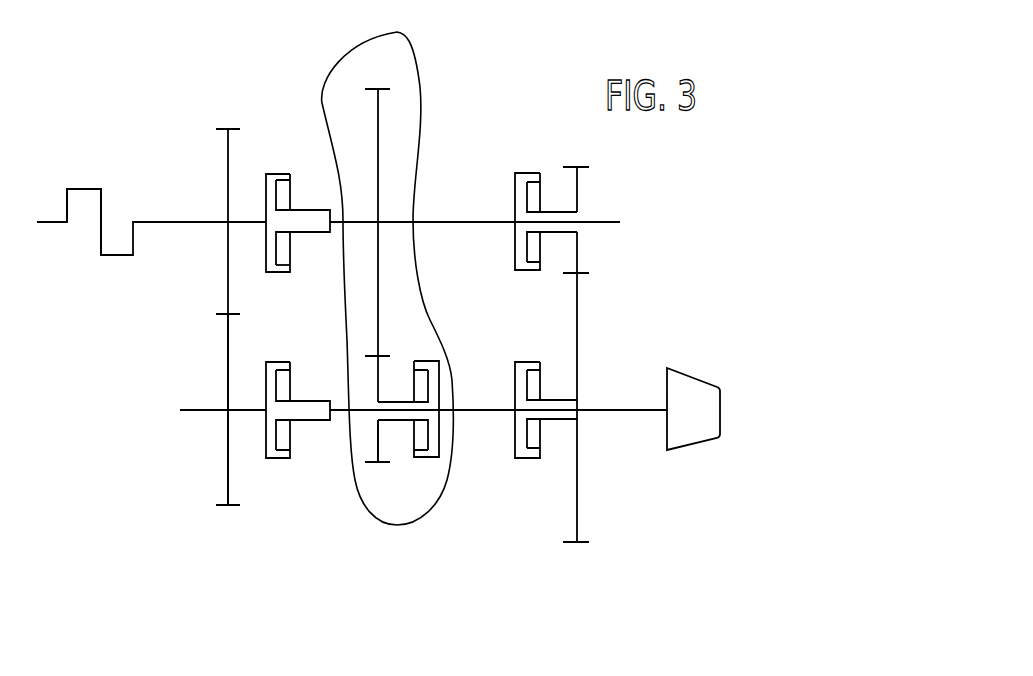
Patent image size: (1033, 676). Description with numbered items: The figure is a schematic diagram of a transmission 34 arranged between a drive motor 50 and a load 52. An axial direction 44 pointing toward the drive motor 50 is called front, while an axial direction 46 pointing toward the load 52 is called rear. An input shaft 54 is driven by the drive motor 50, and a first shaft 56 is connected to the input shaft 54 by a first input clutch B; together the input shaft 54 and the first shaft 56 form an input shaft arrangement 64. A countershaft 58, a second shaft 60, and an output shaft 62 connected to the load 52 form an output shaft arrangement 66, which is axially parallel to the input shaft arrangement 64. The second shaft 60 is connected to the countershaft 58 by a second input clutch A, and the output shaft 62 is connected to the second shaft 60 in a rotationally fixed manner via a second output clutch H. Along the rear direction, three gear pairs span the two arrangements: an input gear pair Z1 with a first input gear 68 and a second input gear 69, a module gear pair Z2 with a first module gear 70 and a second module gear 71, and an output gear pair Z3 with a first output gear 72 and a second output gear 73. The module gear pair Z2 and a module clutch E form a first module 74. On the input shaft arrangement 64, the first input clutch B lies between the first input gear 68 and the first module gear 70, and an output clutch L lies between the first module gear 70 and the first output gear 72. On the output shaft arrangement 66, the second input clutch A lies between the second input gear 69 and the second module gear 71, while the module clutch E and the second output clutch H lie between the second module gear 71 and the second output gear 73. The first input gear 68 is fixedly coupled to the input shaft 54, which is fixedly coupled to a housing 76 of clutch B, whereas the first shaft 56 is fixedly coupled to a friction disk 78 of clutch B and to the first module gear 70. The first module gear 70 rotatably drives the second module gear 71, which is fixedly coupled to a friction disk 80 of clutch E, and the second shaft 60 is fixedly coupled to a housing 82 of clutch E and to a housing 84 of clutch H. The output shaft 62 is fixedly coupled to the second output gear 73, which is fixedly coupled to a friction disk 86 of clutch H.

The transmission 34 is at (133, 73).
The axial direction 44 is at (40, 295).
The axial direction 46 is at (712, 296).
The drive motor 50 is at (83, 189).
The load 52 is at (695, 448).
The input shaft 54 is at (180, 222).
The first shaft 56 is at (478, 222).
The countershaft 58 is at (200, 410).
The second shaft 60 is at (480, 410).
The output shaft 62 is at (628, 410).
The input shaft arrangement 64 is at (663, 210).
The output shaft arrangement 66 is at (732, 405).
The first input gear 68 is at (228, 176).
The second input gear 69 is at (228, 448).
The first module gear 70 is at (378, 172).
The second module gear 71 is at (378, 433).
The first output gear 72 is at (577, 205).
The second output gear 73 is at (577, 465).
The first module 74 is at (433, 47).
The housing 76 is at (298, 188).
The friction disk 78 is at (276, 247).
The friction disk 80 is at (410, 402).
The housing 82 is at (408, 396).
The housing 84 is at (541, 400).
The friction disk 86 is at (552, 400).
The second input clutch A is at (298, 424).
The first input clutch B is at (290, 173).
The module clutch E is at (428, 361).
The second output clutch H is at (527, 362).
The output clutch L is at (546, 208).
The input gear pair Z1 is at (225, 528).
The module gear pair Z2 is at (400, 547).
The output gear pair Z3 is at (572, 563).